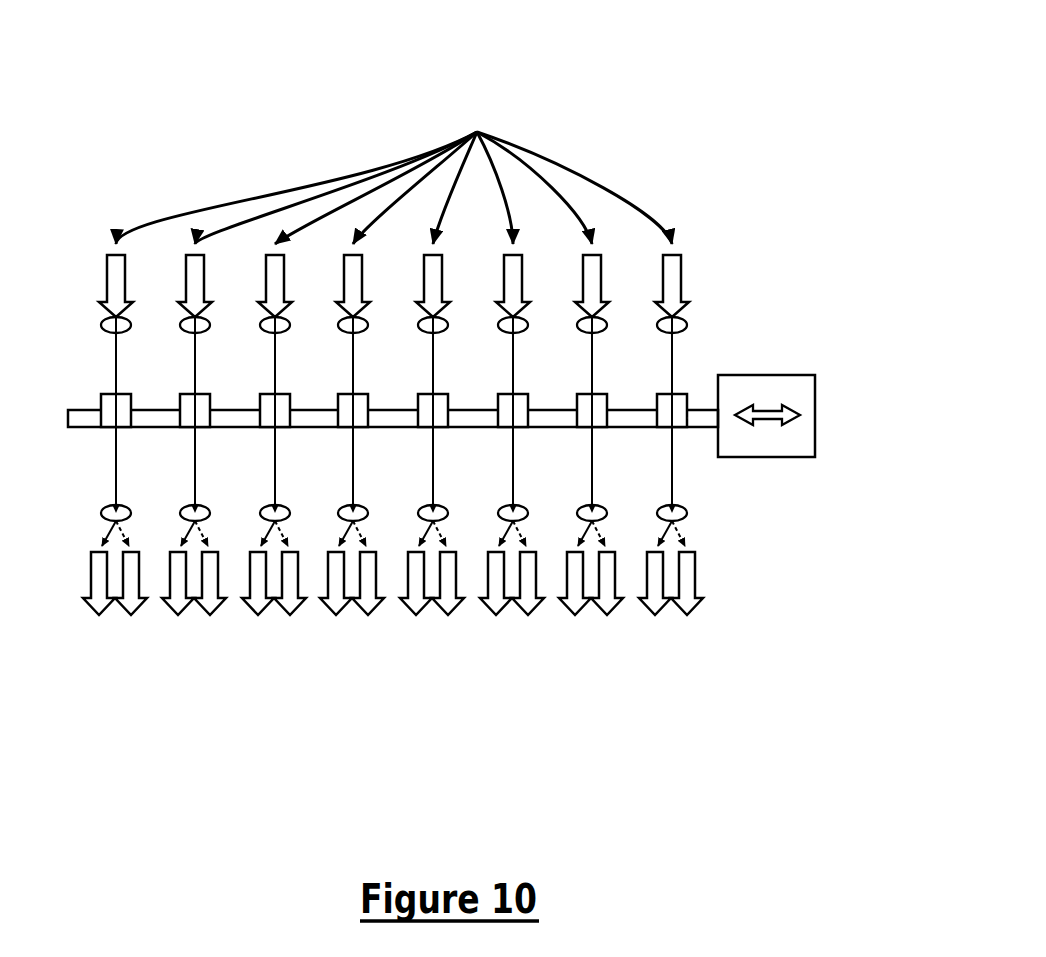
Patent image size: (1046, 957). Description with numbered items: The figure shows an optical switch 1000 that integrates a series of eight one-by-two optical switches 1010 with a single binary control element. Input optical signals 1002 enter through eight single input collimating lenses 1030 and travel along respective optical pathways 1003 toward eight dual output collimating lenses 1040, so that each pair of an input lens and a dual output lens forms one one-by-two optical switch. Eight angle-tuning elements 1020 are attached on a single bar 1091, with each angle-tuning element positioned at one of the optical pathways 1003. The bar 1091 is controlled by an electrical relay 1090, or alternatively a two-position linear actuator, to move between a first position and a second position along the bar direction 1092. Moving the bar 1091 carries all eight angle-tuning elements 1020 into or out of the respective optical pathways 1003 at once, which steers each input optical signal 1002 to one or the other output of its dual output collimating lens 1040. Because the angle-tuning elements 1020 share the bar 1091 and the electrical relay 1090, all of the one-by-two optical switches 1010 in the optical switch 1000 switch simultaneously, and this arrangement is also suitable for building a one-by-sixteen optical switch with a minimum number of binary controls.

The optical switch 1000 is at (691, 105).
The 1×2 optical switches 1010 is at (394, 174).
The input optical signals 1002 is at (698, 277).
The single input collimating lenses 1030 is at (698, 322).
The optical pathways 1003 is at (698, 360).
The angle-tuning elements 1020 is at (74, 398).
The electrical relay 1090 is at (815, 442).
The bar 1091 is at (702, 428).
The bar direction 1092 is at (770, 408).
The dual output collimating lenses 1040 is at (700, 512).